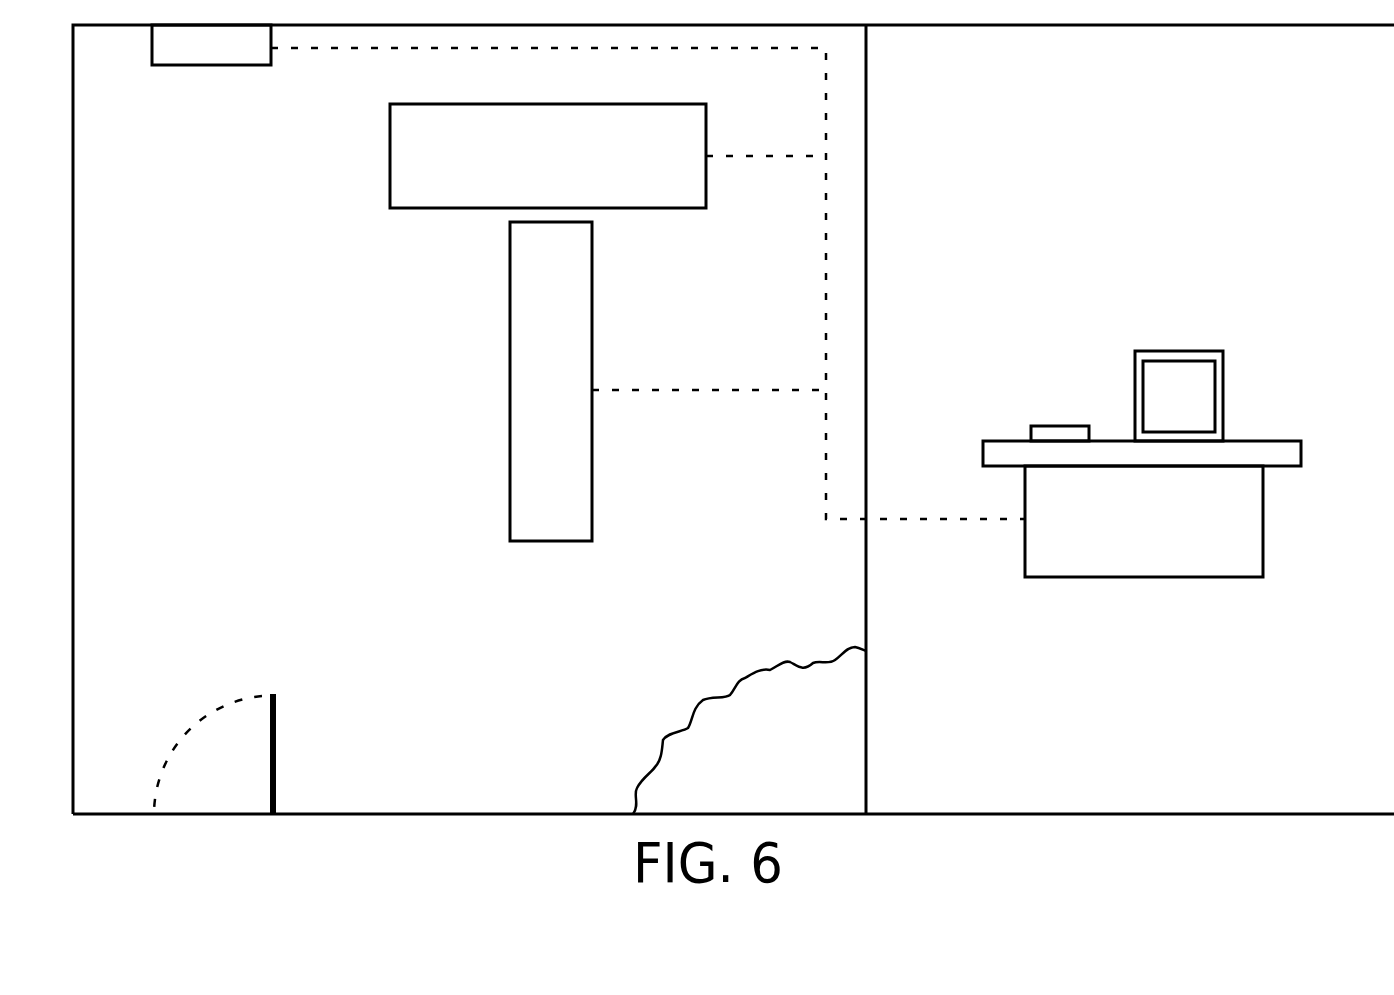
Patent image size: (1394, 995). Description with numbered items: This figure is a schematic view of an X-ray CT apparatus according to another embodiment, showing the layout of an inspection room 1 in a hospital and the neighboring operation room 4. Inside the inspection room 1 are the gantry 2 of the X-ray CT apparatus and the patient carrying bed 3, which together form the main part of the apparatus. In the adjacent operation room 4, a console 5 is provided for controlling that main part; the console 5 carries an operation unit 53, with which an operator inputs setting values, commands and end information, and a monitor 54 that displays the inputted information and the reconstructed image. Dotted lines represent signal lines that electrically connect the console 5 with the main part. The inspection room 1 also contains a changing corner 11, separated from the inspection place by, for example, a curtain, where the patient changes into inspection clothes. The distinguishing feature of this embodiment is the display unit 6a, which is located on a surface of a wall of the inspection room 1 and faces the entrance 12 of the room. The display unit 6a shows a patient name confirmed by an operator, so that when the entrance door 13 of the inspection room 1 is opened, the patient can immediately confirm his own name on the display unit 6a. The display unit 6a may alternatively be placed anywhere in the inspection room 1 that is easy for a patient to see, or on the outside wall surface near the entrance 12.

The inspection room 1 is at (420, 814).
The gantry 2 is at (423, 208).
The patient carrying bed 3 is at (511, 446).
The operation room 4 is at (1161, 814).
The console 5 is at (1263, 543).
The display unit 6a is at (196, 65).
The changing corner 11 is at (752, 720).
The entrance 12 is at (220, 814).
The entrance door 13 is at (277, 725).
The operation unit 53 is at (1055, 426).
The monitor 54 is at (1223, 382).